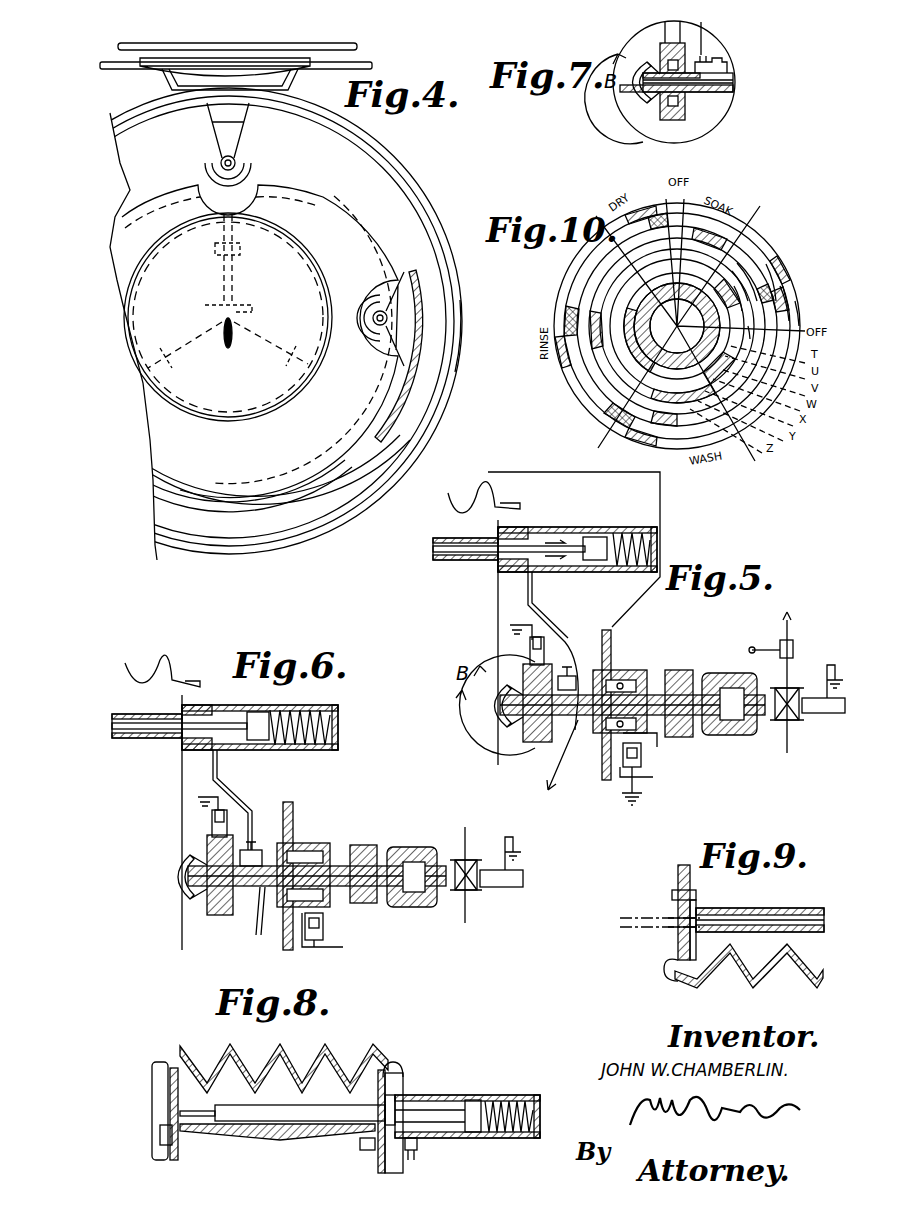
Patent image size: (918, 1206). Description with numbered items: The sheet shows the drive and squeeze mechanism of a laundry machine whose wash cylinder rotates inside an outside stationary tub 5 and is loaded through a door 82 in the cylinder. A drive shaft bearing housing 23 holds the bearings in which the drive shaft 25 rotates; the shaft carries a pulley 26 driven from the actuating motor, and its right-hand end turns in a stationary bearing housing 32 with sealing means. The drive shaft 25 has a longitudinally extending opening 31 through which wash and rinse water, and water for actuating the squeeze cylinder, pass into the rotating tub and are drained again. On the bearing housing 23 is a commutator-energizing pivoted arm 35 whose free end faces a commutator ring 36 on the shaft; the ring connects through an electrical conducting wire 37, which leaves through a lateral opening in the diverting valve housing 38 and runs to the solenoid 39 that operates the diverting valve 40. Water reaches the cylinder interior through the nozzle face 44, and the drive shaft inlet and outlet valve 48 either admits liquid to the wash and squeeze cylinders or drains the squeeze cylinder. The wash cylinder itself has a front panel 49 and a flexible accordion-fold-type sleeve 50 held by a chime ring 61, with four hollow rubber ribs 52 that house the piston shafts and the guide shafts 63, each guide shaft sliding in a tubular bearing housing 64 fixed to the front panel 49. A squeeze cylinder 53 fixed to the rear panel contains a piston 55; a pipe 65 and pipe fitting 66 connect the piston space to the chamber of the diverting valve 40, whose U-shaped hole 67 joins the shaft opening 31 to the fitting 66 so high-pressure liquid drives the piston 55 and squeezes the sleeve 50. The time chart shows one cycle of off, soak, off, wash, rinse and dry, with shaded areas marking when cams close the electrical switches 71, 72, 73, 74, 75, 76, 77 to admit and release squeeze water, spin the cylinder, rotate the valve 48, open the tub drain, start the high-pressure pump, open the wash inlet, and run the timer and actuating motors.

In FIG. 4, the stationary tub 5 is at (469, 372).
In FIG. 5, the drive shaft bearing housing 23 is at (628, 672).
In FIG. 7, the drive shaft 25 is at (727, 72).
In FIG. 5, the pulley 26 is at (676, 670).
In FIG. 7, the longitudinally extending opening 31 is at (735, 92).
In FIG. 5, the stationary bearing housing 32 is at (730, 672).
In FIG. 5, the commutator-energizing pivoted arm 35 is at (657, 742).
In FIG. 5, the commutator ring 36 is at (642, 762).
In FIG. 7, the electrical conducting wire 37 is at (690, 110).
In FIG. 5, the diverting valve housing 38 is at (530, 745).
In FIG. 5, the solenoid 39 is at (538, 636).
In FIG. 7, the diverting valve 40 is at (660, 46).
In FIG. 5, the diverting valve 40 is at (532, 652).
In FIG. 6, the diverting valve 40 is at (207, 892).
In FIG. 5, the nozzle face 44 is at (488, 704).
In FIG. 6, the drive shaft inlet and outlet valve 48 is at (474, 860).
In FIG. 9, the front panel 49 is at (678, 881).
In FIG. 4, the flexible accordion-fold-type sleeve 50 is at (404, 176).
In FIG. 9, the flexible accordion-fold-type sleeve 50 is at (771, 981).
In FIG. 8, the flexible accordion-fold-type sleeve 50 is at (262, 1060).
In FIG. 4, the hollow rubber ribs 52 is at (238, 133).
In FIG. 5, the squeeze cylinder 53 is at (603, 536).
In FIG. 6, the squeeze cylinder 53 is at (312, 710).
In FIG. 8, the squeeze cylinder 53 is at (432, 1100).
In FIG. 6, the piston 55 is at (258, 742).
In FIG. 9, the chime ring 61 is at (669, 985).
In FIG. 4, the guide shaft 63 is at (392, 322).
In FIG. 9, the guide shaft 63 is at (670, 919).
In FIG. 9, the tubular bearing housing 64 is at (752, 926).
In FIG. 6, the pipe 65 is at (222, 779).
In FIG. 5, the pipe fitting 66 is at (570, 676).
In FIG. 6, the pipe fitting 66 is at (252, 850).
In FIG. 6, the U-shaped hole 67 is at (205, 858).
In FIG. 4, the door 82 is at (287, 248).
In FIG. 10, the electrical switch 71 is at (790, 329).
In FIG. 10, the electrical switch 72 is at (765, 316).
In FIG. 10, the electrical switch 73 is at (775, 321).
In FIG. 10, the electrical switch 74 is at (755, 306).
In FIG. 10, the electrical switch 75 is at (740, 301).
In FIG. 10, the electrical switch 76 is at (720, 291).
In FIG. 10, the electrical switch 77 is at (700, 286).